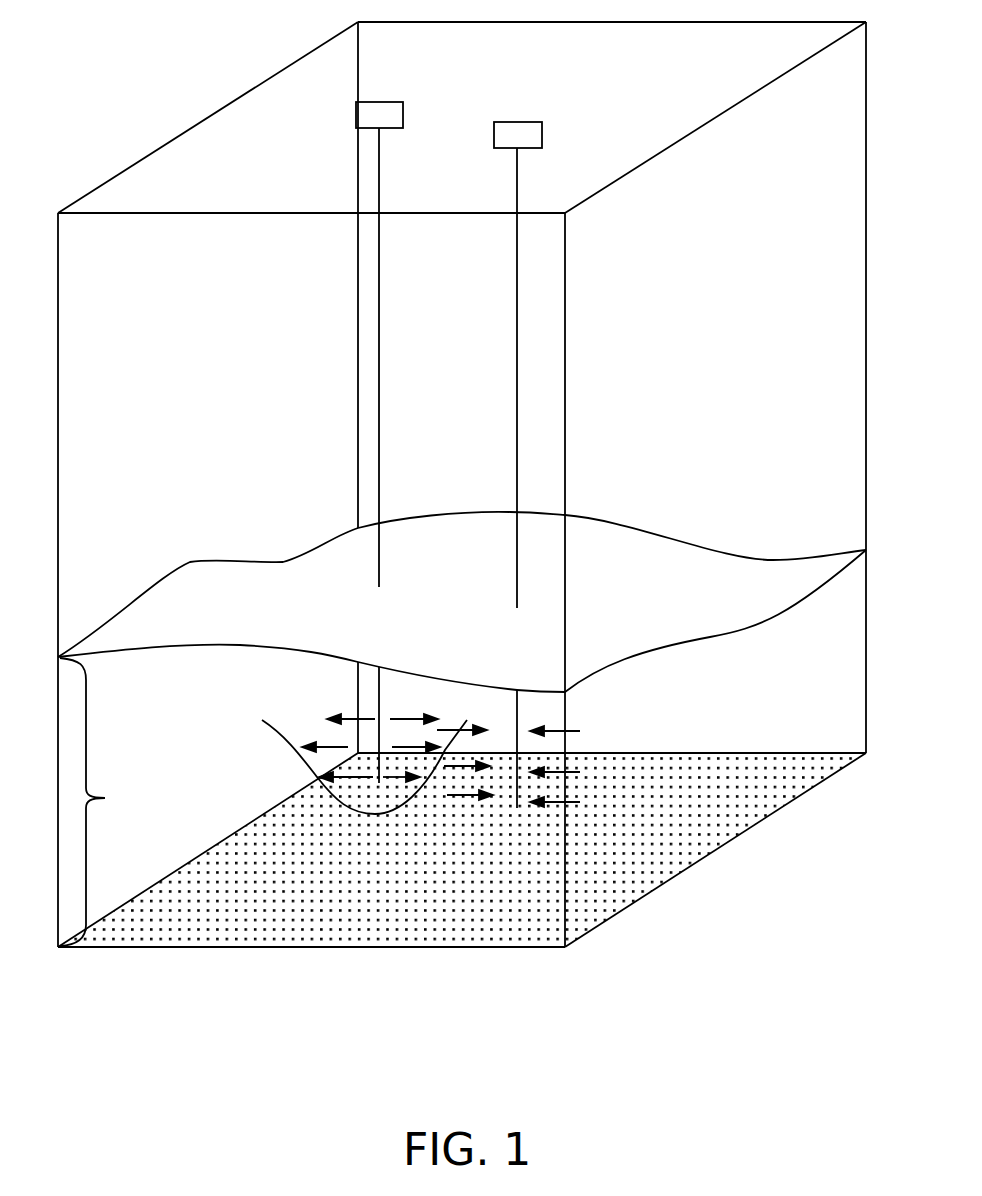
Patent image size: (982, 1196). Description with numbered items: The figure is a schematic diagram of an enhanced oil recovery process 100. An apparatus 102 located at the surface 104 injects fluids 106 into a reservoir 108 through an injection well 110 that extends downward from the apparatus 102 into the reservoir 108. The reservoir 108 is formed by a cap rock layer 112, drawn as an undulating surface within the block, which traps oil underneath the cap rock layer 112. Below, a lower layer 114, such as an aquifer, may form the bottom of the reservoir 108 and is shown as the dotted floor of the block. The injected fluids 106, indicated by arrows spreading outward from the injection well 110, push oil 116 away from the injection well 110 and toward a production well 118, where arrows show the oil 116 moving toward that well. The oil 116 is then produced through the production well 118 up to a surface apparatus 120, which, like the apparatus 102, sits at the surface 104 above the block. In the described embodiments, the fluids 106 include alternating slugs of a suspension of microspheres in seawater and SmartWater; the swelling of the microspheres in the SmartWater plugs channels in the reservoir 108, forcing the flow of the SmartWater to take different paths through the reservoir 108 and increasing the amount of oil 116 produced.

The enhanced oil recovery process 100 is at (478, 1117).
The apparatus 102 is at (383, 100).
The surface 104 is at (223, 132).
The fluids 106 is at (347, 718).
The reservoir 108 is at (110, 802).
The injection well 110 is at (380, 338).
The cap rock layer 112 is at (738, 573).
The lower layer 114 is at (267, 946).
The oil 116 is at (573, 733).
The production well 118 is at (517, 400).
The surface apparatus 120 is at (527, 122).